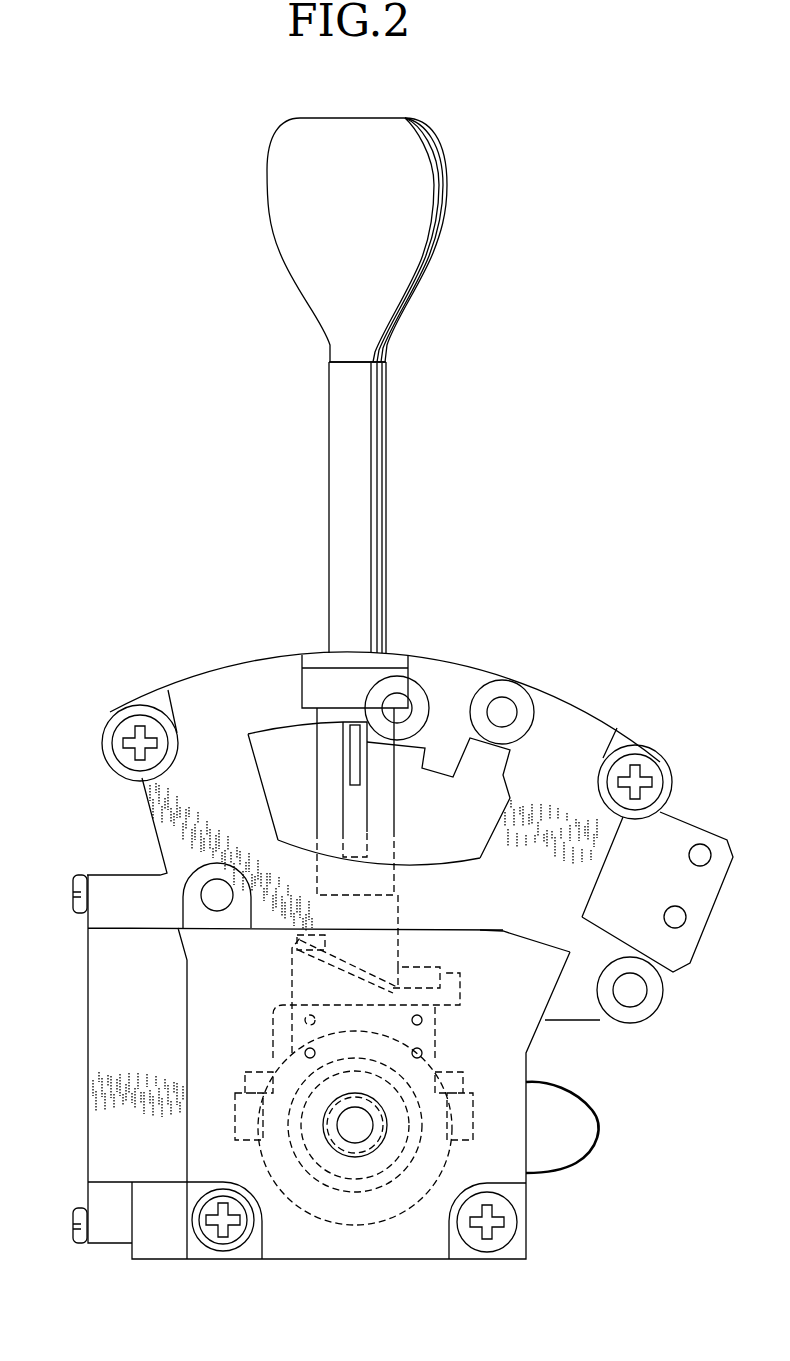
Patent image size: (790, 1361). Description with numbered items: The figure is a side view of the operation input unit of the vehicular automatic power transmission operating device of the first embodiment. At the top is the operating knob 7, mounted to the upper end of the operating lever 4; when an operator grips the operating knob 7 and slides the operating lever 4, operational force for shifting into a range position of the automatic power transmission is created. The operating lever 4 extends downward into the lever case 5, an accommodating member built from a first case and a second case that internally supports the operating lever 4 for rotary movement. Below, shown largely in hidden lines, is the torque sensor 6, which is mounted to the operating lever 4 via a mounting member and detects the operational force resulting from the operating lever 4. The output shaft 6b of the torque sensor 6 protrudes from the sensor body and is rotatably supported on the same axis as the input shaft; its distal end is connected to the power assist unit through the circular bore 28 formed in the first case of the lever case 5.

The operating lever 4 is at (386, 467).
The lever case 5 is at (215, 702).
The torque sensor 6 is at (443, 1153).
The output shaft 6b is at (363, 1160).
The operating knob 7 is at (447, 182).
The circular bore 28 is at (382, 1145).